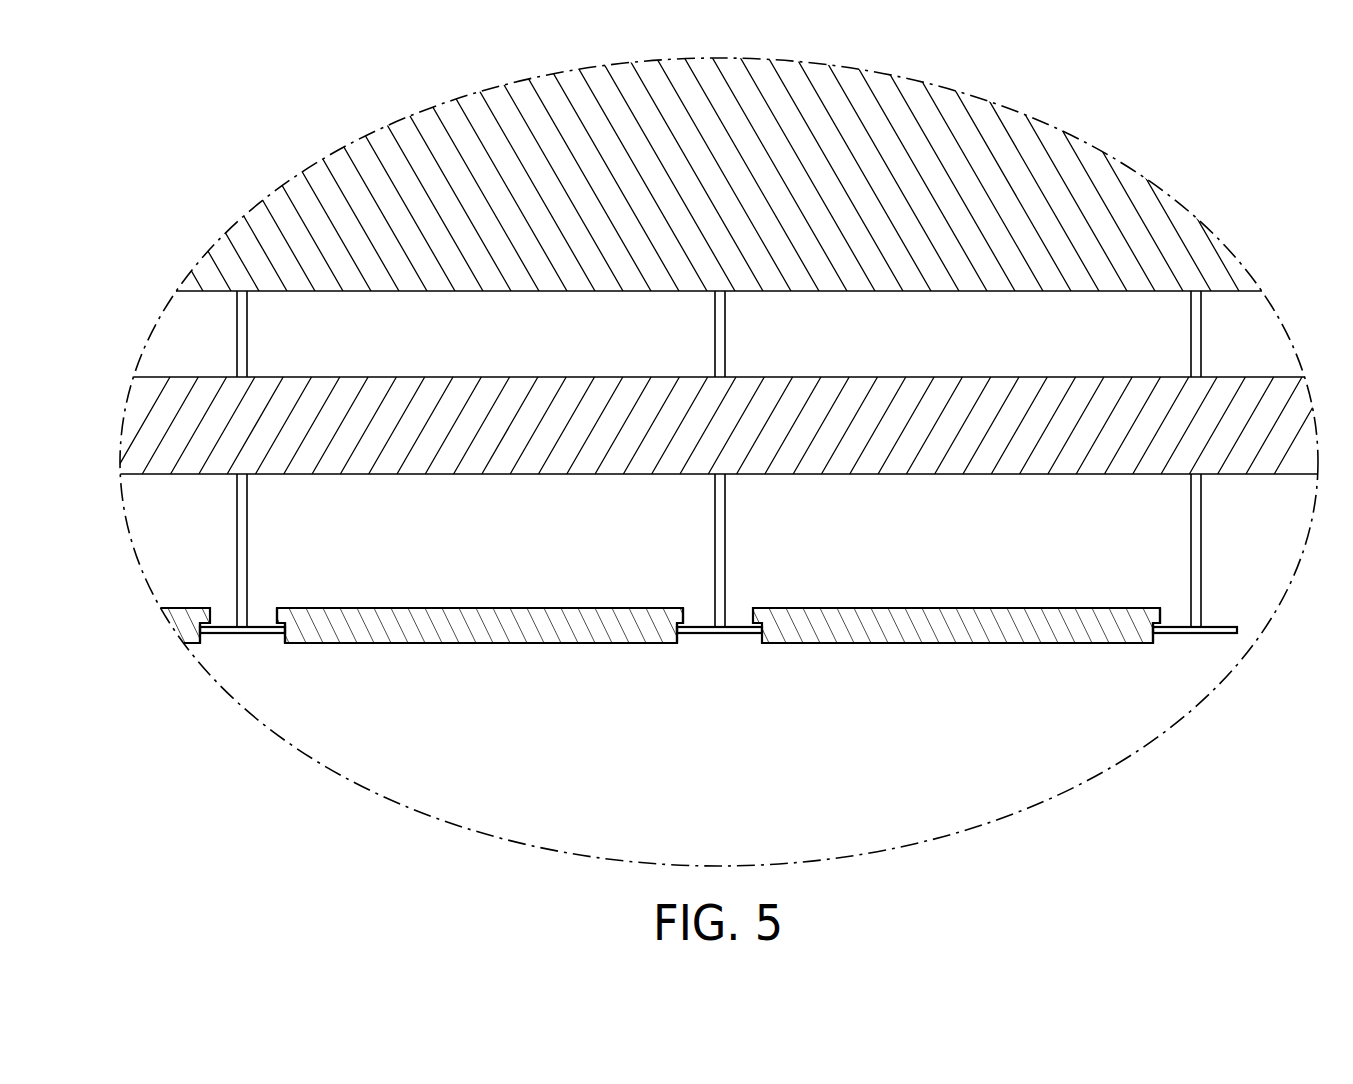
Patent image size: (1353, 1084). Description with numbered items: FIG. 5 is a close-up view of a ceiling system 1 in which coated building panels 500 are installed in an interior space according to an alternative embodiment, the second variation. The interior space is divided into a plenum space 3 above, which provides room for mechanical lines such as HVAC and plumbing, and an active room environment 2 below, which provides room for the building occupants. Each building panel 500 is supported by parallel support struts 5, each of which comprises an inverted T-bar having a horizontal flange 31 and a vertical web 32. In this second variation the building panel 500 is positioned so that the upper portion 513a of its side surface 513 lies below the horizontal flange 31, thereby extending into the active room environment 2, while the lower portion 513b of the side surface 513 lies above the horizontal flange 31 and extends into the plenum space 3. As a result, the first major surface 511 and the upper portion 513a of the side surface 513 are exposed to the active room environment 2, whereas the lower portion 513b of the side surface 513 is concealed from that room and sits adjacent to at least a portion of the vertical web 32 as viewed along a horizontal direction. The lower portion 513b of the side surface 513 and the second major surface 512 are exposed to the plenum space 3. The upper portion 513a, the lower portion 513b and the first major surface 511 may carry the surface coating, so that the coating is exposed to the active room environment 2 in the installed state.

The ceiling system 1 is at (152, 215).
The active room environment 2 is at (200, 337).
The plenum space 3 is at (424, 770).
The support strut 5 is at (1287, 337).
The horizontal flange 31 is at (230, 635).
The vertical web 32 is at (243, 509).
The building panel 500 is at (513, 646).
The first major surface 511 is at (353, 643).
The second major surface 512 is at (450, 607).
The side surface 513 is at (1163, 617).
The upper portion of the side surface 513a is at (280, 639).
The lower portion of the side surface 513b is at (277, 618).